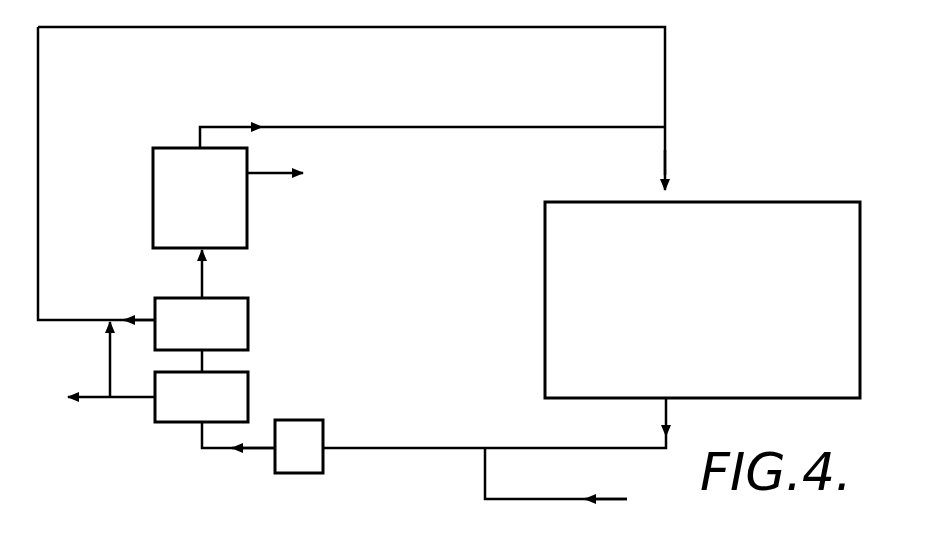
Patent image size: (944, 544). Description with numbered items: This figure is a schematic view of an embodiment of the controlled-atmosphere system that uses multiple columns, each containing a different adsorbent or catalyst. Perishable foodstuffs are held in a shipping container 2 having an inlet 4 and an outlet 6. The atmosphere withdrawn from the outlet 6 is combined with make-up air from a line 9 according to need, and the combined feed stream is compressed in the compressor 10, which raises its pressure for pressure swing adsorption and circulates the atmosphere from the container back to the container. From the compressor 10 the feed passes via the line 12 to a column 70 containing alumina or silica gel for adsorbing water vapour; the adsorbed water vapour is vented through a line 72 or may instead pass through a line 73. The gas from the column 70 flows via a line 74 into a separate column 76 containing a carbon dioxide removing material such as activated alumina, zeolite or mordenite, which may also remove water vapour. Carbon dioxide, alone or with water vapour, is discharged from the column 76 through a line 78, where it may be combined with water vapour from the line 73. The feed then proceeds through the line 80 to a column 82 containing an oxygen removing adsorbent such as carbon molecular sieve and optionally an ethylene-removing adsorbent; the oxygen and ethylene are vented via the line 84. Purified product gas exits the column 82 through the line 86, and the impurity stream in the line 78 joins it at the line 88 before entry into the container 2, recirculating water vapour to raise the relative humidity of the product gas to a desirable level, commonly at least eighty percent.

The shipping container 2 is at (765, 222).
The inlet 4 is at (672, 198).
The outlet 6 is at (670, 392).
The make-up air line 9 is at (487, 473).
The compressor 10 is at (292, 428).
The line 12 is at (220, 452).
The column 70 is at (228, 396).
The vent line 72 is at (100, 397).
The line 73 is at (110, 367).
The line 74 is at (205, 358).
The column 76 is at (231, 325).
The line 78 is at (70, 320).
The line 80 is at (205, 290).
The column 82 is at (223, 227).
The vent line 84 is at (262, 180).
The product gas line 86 is at (310, 127).
The line 88 is at (668, 150).